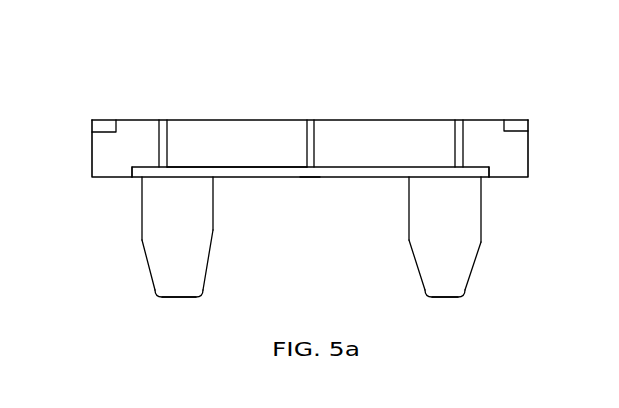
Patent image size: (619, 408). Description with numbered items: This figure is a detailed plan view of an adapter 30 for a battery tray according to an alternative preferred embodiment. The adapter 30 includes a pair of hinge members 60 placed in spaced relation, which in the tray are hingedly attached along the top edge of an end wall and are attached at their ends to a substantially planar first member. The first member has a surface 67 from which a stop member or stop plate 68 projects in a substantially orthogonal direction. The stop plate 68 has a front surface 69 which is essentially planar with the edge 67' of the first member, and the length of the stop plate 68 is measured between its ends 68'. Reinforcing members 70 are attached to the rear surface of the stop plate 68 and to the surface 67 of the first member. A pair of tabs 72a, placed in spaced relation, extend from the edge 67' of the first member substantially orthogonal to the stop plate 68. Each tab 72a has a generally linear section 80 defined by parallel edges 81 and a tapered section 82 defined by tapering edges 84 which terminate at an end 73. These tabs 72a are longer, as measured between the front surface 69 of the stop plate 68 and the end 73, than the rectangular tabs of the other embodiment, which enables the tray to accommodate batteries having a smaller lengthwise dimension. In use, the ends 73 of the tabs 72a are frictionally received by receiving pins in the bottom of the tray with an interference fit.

The adapter 30 is at (165, 46).
The hinge member 60 is at (107, 125).
The surface of first member 67 is at (297, 172).
The edge of first member 67' is at (237, 149).
The stop plate 68 is at (310, 190).
The end of stop plate 68' is at (316, 161).
The front surface of stop plate 69 is at (309, 177).
The reinforcing member 70 is at (163, 120).
The tab 72a is at (192, 273).
The end of tab 73 is at (177, 297).
The linear section 80 is at (163, 223).
The parallel edge 81 is at (142, 202).
The tapered section 82 is at (163, 262).
The tapering edge 84 is at (148, 282).